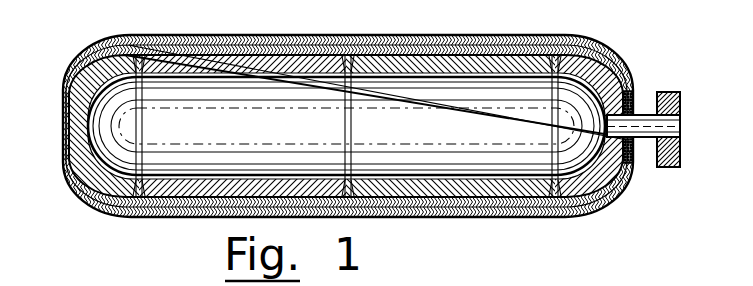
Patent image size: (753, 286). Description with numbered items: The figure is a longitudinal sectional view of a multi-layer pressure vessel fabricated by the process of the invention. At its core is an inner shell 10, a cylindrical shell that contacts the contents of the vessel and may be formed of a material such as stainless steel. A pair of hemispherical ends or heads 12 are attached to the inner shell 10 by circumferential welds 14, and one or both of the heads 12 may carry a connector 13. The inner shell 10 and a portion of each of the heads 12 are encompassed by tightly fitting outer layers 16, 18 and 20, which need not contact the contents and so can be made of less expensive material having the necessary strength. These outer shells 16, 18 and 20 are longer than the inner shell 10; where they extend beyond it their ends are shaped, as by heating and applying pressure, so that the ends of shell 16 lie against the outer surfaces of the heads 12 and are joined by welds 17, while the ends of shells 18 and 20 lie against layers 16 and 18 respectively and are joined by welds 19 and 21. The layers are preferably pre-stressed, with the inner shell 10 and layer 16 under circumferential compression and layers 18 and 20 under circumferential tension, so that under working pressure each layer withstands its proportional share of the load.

The inner shell 10 is at (302, 75).
The hemispherical heads 12 is at (76, 134).
The connector 13 is at (678, 154).
The circumferential welds 14 is at (139, 68).
The outer layer 16 is at (270, 50).
The welds 17 is at (72, 112).
The outer layer 18 is at (312, 50).
The welds 19 is at (67, 99).
The outer layer 20 is at (365, 43).
The welds 21 is at (63, 87).